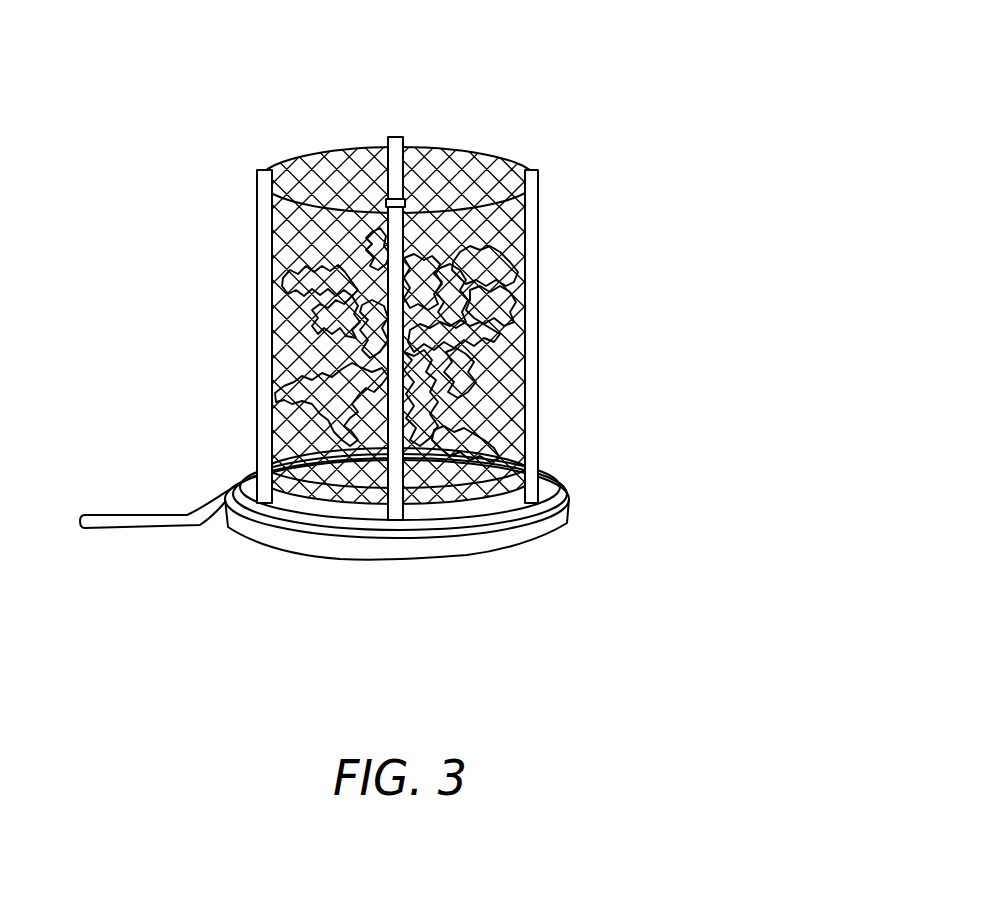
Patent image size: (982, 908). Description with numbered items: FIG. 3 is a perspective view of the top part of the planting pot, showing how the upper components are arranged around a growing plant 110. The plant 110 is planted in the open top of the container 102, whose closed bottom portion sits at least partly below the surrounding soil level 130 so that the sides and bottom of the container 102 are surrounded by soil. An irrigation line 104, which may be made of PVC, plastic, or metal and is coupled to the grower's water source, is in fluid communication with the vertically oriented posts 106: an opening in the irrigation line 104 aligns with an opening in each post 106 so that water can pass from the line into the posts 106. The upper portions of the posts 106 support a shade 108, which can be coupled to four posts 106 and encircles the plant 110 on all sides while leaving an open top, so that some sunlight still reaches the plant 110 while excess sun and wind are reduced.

The container 102 is at (288, 540).
The irrigation line 104 is at (120, 515).
The vertically oriented posts 106 is at (397, 199).
The shade 108 is at (513, 372).
The plant 110 is at (437, 278).
The surrounding soil level 130 is at (628, 513).